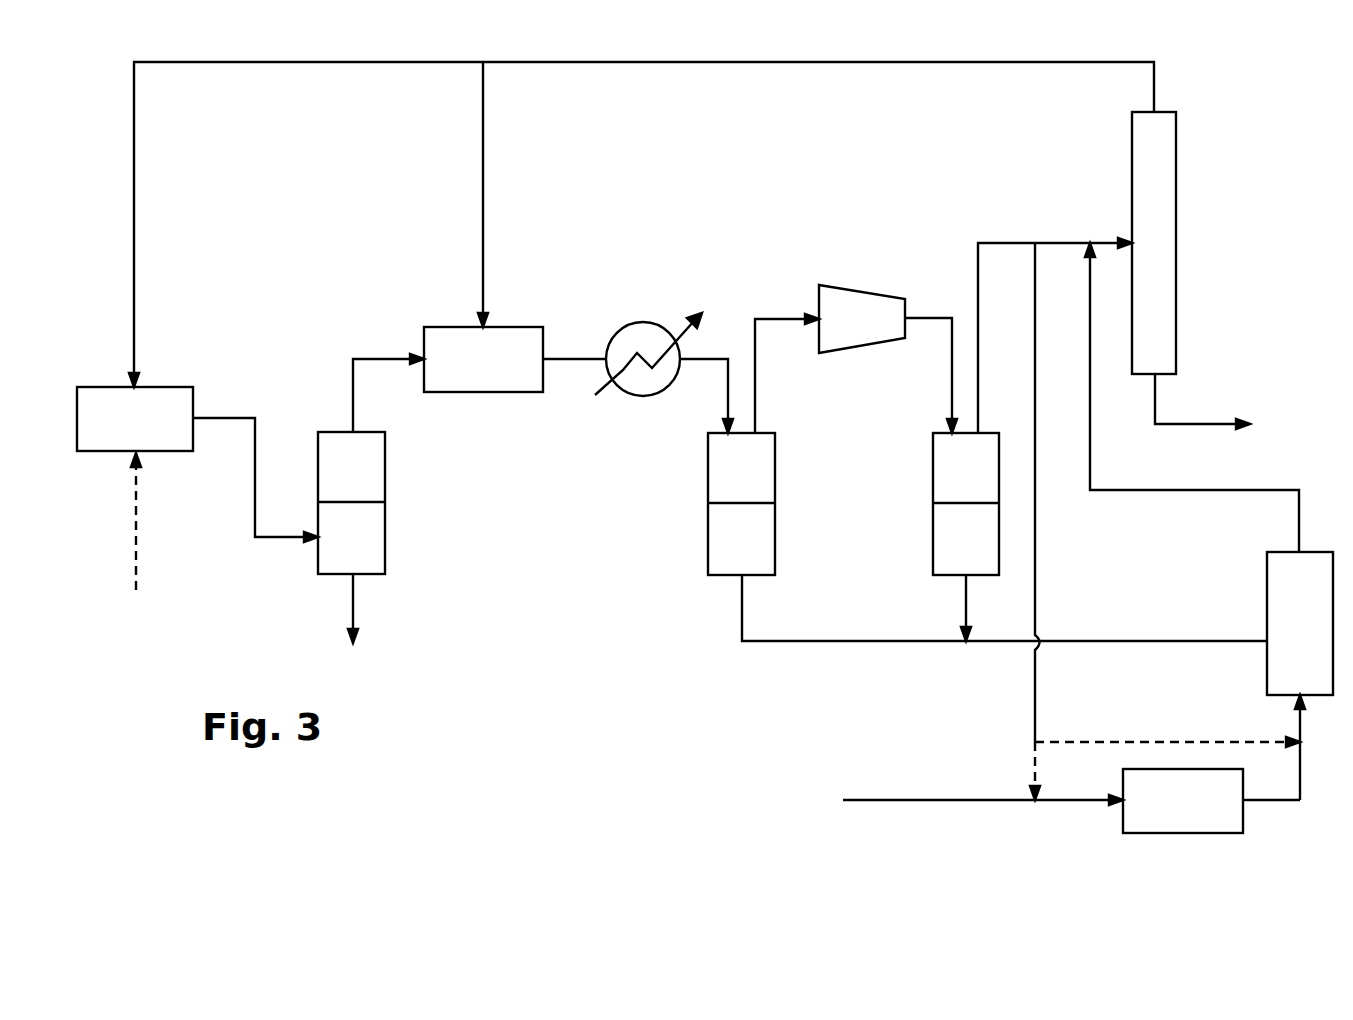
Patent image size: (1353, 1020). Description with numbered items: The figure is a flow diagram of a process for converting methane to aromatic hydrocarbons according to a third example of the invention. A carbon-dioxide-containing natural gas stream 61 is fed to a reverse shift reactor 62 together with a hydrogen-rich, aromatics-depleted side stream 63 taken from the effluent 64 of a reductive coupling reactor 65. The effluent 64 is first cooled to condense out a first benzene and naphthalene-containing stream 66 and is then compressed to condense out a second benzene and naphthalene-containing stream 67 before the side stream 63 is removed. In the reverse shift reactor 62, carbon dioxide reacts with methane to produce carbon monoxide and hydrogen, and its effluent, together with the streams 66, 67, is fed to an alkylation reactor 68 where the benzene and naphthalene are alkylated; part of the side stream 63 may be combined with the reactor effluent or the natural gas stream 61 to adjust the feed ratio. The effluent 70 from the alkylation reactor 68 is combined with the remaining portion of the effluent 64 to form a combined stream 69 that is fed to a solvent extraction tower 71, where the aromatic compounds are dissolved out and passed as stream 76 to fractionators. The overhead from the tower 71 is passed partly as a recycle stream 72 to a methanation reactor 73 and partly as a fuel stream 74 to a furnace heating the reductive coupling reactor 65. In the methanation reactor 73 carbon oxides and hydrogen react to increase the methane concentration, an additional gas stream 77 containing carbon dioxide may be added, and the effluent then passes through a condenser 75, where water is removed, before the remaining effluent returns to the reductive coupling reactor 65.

The CO2-containing natural gas stream 61 is at (980, 800).
The reverse shift reactor 62 is at (1211, 801).
The hydrogen-rich, aromatics-depleted side stream 63 is at (1035, 582).
The effluent from the reductive coupling reactor 64 is at (568, 359).
The reductive coupling reactor 65 is at (515, 359).
The first benzene and naphthalene-containing stream 66 is at (742, 603).
The second benzene and naphthalene-containing stream 67 is at (966, 602).
The alkylation reactor 68 is at (1300, 623).
The combined stream 69 is at (1103, 240).
The effluent from the alkylation reactor 70 is at (1183, 490).
The solvent extraction tower 71 is at (1156, 268).
The recycle stream 72 is at (134, 232).
The methanation reactor 73 is at (197, 464).
The fuel stream 74 is at (483, 183).
The separator 75 is at (385, 527).
The aromatics stream to fractionators 76 is at (1208, 424).
The additional gas stream 77 is at (136, 550).